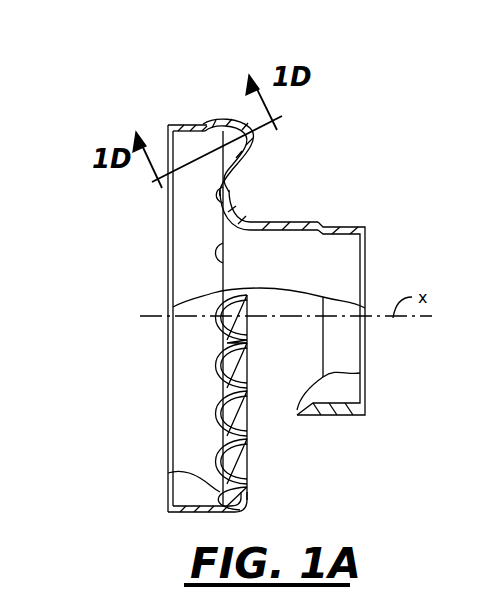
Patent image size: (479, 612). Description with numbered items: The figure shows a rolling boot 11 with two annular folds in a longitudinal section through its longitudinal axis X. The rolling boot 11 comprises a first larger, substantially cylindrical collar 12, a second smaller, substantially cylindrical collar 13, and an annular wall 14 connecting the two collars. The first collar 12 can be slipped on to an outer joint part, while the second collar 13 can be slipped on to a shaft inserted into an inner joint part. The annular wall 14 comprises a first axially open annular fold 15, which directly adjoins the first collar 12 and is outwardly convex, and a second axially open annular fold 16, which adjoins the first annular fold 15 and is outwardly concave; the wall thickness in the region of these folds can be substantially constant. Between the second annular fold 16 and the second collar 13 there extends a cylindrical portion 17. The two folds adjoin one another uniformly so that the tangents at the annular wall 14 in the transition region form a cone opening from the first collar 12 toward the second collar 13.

The rolling boot 11 is at (381, 132).
The first collar 12 is at (186, 514).
The second collar 13 is at (343, 418).
The annular wall 14 is at (282, 174).
The first annular fold 15 is at (254, 151).
The second annular fold 16 is at (250, 213).
The cylindrical portion 17 is at (318, 222).